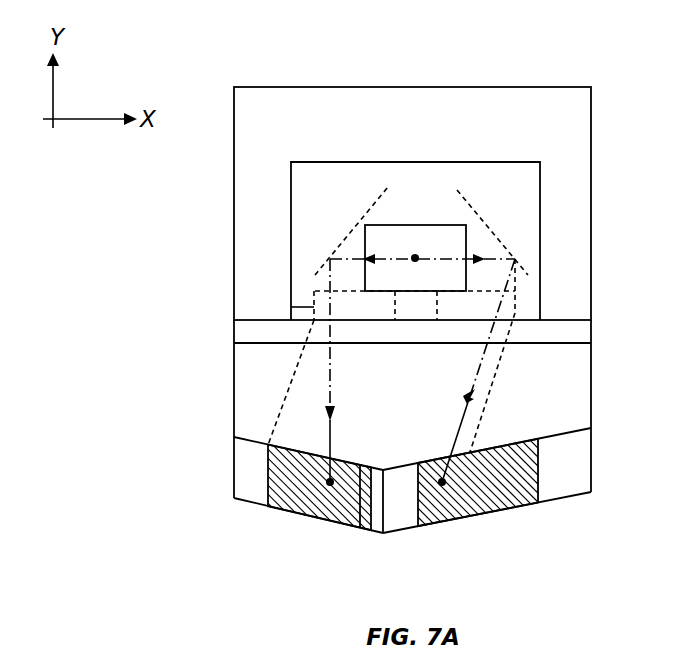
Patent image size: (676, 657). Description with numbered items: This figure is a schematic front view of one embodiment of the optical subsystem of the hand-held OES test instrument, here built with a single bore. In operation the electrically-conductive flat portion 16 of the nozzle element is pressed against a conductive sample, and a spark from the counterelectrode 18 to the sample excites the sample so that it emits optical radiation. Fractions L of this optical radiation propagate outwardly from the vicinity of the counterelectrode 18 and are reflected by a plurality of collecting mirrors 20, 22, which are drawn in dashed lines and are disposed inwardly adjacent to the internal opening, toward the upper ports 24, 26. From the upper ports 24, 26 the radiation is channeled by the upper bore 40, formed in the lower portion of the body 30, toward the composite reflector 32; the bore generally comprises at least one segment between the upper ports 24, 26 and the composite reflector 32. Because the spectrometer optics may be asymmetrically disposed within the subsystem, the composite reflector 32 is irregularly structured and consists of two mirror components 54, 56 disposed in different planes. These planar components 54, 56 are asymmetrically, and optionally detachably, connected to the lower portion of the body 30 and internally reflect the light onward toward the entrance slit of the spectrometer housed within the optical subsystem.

The electrically-conductive flat portion 16 is at (428, 183).
The counterelectrode 18 is at (415, 258).
The collecting mirror 20 is at (479, 208).
The collecting mirror 22 is at (352, 233).
The upper port 24 is at (510, 313).
The upper port 26 is at (338, 298).
The body 30 is at (579, 117).
The composite reflector 32 is at (404, 520).
The upper bore 40 is at (287, 400).
The mirror component 54 is at (478, 491).
The mirror component 56 is at (317, 513).
The fractions of optical radiation L is at (473, 258).